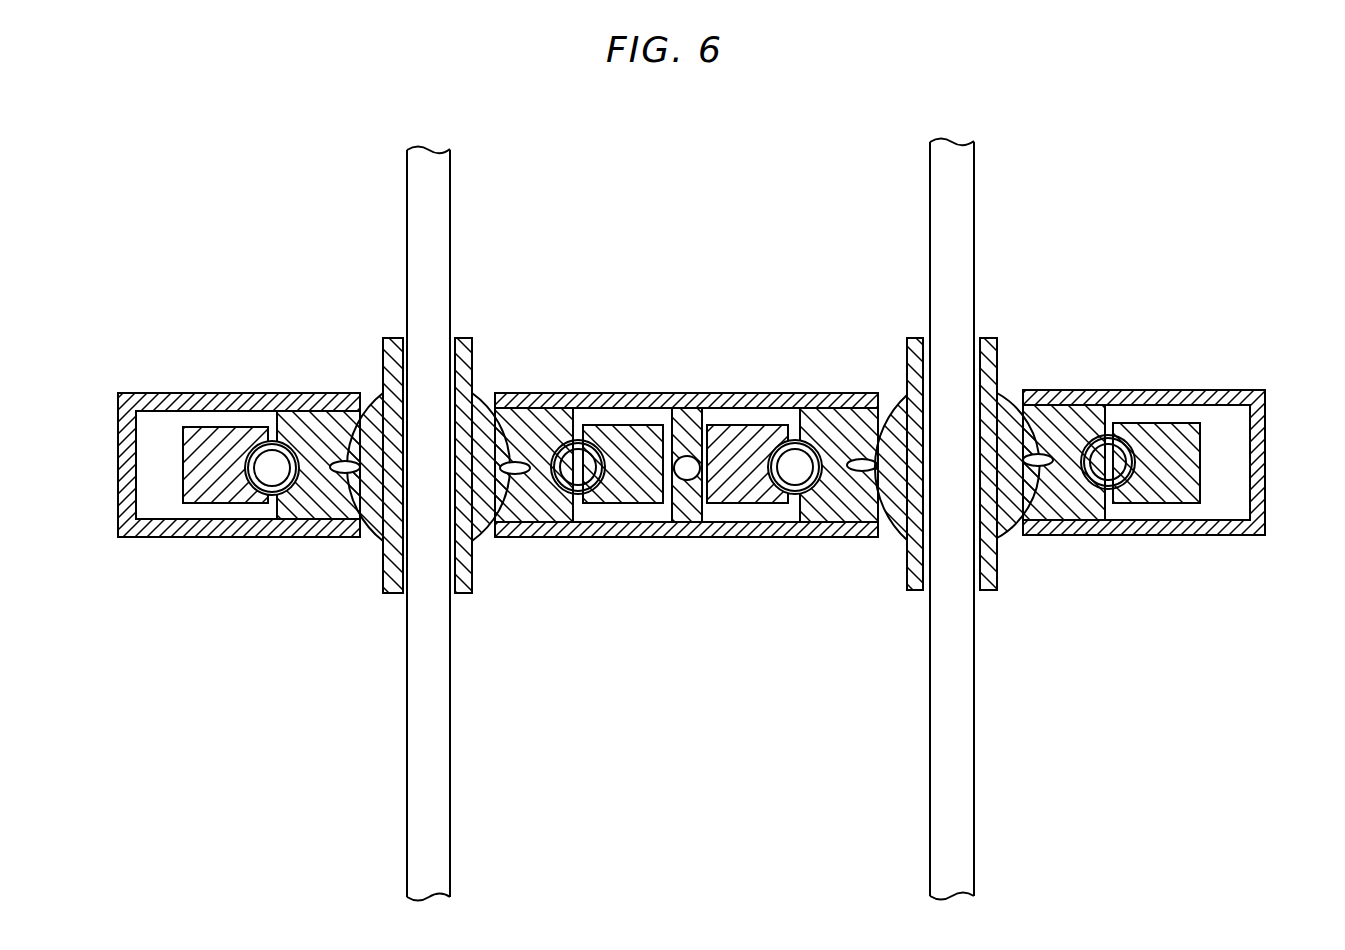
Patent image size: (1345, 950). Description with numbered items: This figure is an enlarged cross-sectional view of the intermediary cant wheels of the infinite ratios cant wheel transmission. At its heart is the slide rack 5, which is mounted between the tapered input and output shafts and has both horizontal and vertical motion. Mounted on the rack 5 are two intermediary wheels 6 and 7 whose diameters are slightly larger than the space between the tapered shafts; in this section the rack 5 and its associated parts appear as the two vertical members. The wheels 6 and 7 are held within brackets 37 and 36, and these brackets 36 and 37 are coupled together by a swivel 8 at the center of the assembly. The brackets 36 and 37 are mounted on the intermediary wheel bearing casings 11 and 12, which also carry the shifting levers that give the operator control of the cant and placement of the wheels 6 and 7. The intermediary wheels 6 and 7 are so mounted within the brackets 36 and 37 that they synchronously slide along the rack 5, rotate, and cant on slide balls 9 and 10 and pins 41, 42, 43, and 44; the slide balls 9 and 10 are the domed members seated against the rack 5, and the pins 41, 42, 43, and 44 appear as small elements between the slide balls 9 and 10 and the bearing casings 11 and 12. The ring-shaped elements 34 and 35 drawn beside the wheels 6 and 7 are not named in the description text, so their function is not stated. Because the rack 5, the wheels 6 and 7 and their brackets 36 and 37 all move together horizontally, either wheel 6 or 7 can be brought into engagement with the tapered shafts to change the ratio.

The rack 5 is at (443, 200).
The intermediary wheel 6 is at (186, 468).
The intermediary wheel 7 is at (1188, 462).
The swivel 8 is at (684, 452).
The slide ball 9 is at (468, 348).
The slide ball 10 is at (990, 350).
The intermediary wheel bearing casing 11 is at (537, 415).
The intermediary wheel bearing casing 12 is at (1070, 413).
The ring seal 34 is at (262, 486).
The ring seal 35 is at (790, 485).
The bracket 36 is at (1262, 413).
The bracket 37 is at (118, 410).
The pin 41 is at (341, 477).
The pin 42 is at (515, 478).
The pin 43 is at (860, 474).
The pin 44 is at (1040, 468).